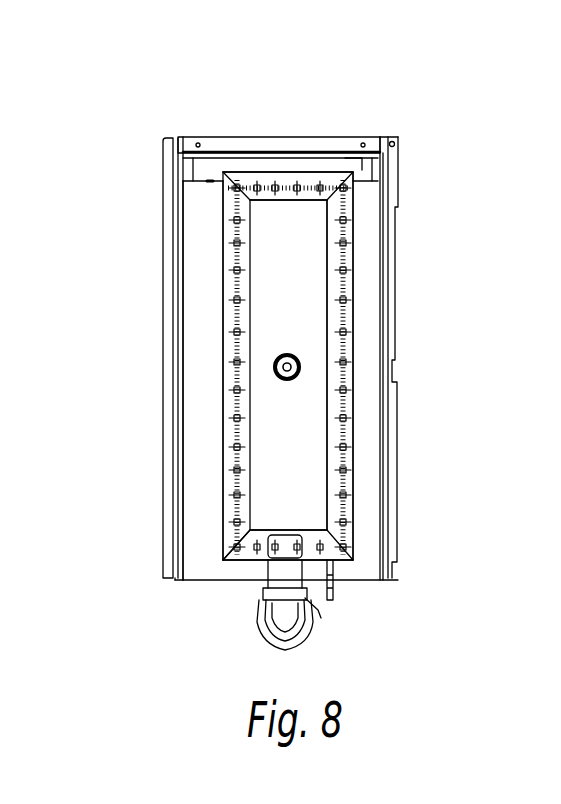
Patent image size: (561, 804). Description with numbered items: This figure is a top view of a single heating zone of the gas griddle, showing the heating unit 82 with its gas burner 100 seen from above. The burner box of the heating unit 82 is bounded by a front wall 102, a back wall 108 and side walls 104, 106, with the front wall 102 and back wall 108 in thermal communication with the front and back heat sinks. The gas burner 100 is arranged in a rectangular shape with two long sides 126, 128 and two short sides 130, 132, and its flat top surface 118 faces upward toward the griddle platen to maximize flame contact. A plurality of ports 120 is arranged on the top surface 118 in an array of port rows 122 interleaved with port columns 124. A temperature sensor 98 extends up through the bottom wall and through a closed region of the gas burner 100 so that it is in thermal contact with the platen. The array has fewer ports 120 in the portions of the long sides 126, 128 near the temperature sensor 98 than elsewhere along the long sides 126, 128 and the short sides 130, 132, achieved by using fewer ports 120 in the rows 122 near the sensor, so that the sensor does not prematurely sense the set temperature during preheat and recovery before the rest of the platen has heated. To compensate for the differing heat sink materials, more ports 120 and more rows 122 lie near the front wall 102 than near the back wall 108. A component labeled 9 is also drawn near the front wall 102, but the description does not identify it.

The heating unit 82 is at (142, 192).
The side wall 106 is at (170, 152).
The long side 128 is at (210, 383).
The back wall 108 is at (363, 137).
The short side 130 is at (350, 163).
The side wall 104 is at (390, 183).
The gas burner 100 is at (362, 237).
The top surface 118 is at (283, 177).
The ports 120 is at (257, 185).
The long side 126 is at (358, 293).
The port columns 124 is at (345, 483).
The port rows 122 is at (345, 332).
The temperature sensor 98 is at (284, 353).
The connector 9 is at (298, 535).
The short side 132 is at (237, 560).
The front wall 102 is at (362, 580).